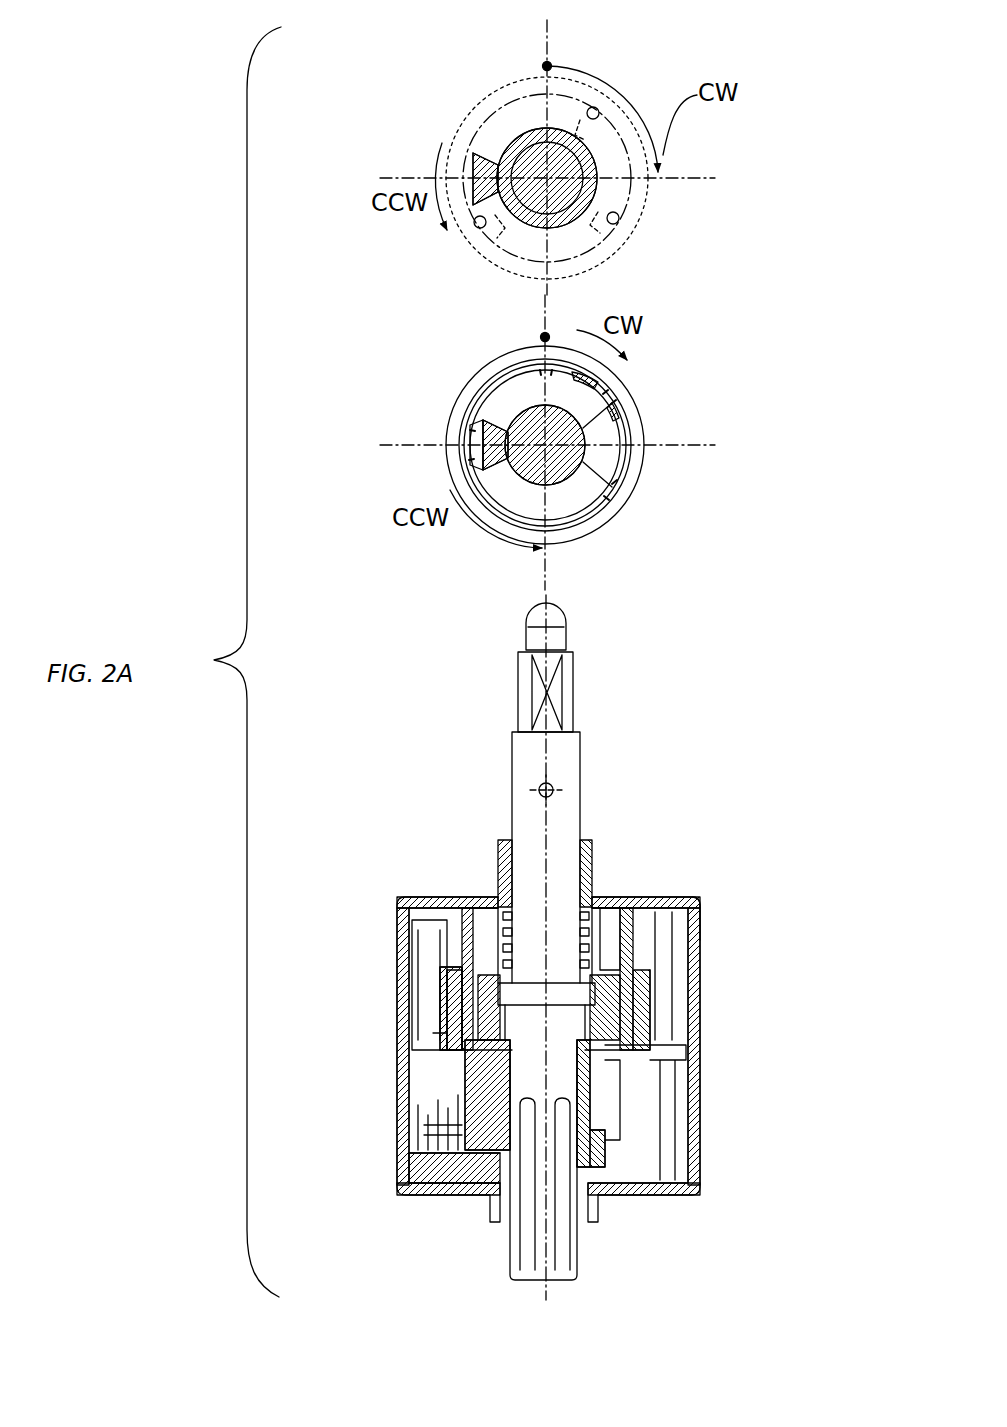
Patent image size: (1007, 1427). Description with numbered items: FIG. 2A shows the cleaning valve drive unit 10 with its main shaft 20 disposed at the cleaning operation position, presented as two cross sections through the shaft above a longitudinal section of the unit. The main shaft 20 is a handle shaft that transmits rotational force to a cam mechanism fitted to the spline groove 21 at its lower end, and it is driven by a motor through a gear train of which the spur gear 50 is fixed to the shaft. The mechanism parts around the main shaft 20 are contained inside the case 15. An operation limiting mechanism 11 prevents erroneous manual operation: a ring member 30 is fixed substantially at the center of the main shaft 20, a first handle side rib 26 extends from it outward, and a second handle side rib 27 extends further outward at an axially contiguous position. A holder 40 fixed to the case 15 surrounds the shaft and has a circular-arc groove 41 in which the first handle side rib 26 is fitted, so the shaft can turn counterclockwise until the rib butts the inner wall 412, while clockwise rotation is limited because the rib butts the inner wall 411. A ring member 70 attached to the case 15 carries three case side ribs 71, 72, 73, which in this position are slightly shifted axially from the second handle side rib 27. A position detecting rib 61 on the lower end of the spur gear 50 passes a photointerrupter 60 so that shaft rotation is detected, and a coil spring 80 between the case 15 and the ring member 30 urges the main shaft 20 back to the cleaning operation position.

The cleaning valve drive unit 10 is at (712, 808).
The operation limiting mechanism 11 is at (660, 900).
The case 15 is at (697, 903).
The main shaft 20 is at (590, 206).
The spline groove 21 is at (560, 1255).
The first handle side rib 26 is at (487, 432).
The second handle side rib 27 is at (487, 155).
The ring member 30 is at (555, 1027).
The holder 40 is at (485, 378).
The groove 41 is at (622, 425).
The inner wall 411 is at (497, 430).
The inner wall 412 is at (595, 418).
The spur gear 50 is at (440, 990).
The photointerrupter 60 is at (448, 1167).
The position detecting rib 61 is at (633, 1062).
The ring member 70 is at (458, 107).
The case side rib 71 is at (470, 235).
The case side rib 72 is at (605, 105).
The case side rib 73 is at (630, 222).
The coil spring 80 is at (462, 907).